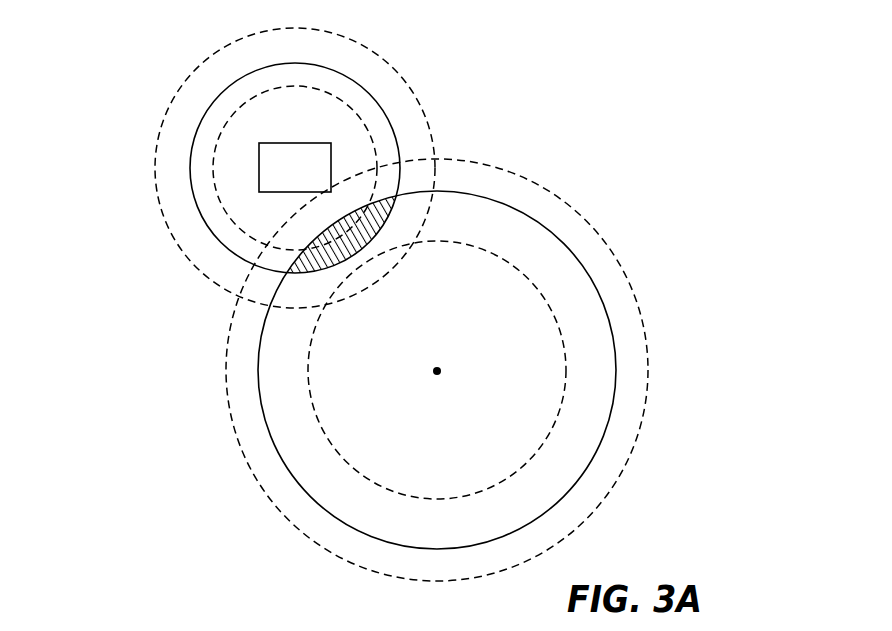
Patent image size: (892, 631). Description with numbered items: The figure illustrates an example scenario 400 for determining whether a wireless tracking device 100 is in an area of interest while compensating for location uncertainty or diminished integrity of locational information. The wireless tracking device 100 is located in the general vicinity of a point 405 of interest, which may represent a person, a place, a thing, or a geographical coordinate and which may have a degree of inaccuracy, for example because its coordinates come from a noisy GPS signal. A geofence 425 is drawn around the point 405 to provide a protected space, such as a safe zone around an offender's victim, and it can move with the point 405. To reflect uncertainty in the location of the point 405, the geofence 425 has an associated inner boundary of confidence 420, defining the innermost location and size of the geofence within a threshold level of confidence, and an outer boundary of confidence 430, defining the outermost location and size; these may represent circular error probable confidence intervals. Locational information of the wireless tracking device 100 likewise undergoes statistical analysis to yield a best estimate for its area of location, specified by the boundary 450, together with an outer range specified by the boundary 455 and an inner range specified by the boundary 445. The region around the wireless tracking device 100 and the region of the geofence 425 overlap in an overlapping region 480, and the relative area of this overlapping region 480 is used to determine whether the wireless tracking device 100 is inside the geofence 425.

The example scenario 400 is at (509, 52).
The wireless tracking device 100 is at (314, 178).
The point of interest 405 is at (414, 371).
The inner boundary of confidence 420 is at (299, 361).
The geofence 425 is at (256, 418).
The outer boundary of confidence 430 is at (218, 378).
The inner range boundary 445 is at (218, 219).
The best estimate boundary 450 is at (178, 170).
The outer range boundary 455 is at (152, 114).
The overlapping region 480 is at (298, 266).